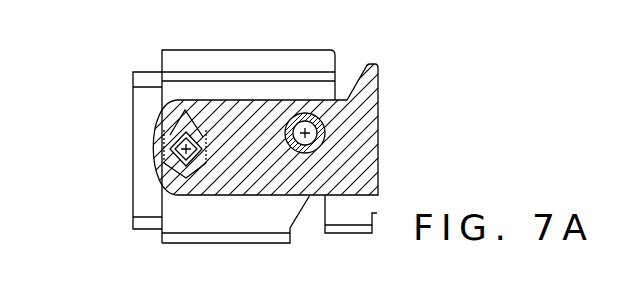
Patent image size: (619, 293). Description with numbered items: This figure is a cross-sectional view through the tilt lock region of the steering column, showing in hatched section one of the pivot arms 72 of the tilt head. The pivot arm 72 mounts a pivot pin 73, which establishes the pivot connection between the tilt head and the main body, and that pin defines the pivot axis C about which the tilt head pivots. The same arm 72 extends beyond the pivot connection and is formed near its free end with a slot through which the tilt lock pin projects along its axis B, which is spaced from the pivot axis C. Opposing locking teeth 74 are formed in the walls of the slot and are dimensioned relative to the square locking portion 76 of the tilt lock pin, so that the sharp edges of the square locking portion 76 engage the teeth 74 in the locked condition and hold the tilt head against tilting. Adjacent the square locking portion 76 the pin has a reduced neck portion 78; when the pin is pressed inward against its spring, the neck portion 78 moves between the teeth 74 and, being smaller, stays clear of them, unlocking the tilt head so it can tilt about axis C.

The pivot arms 72 is at (368, 170).
The pivot pins 73 is at (318, 122).
The locking teeth 74 is at (193, 132).
The square locking portion 76 is at (178, 180).
The reduced neck portion 78 is at (170, 147).
The axis of the tilt lock pin B is at (168, 163).
The pivot axis C is at (318, 120).